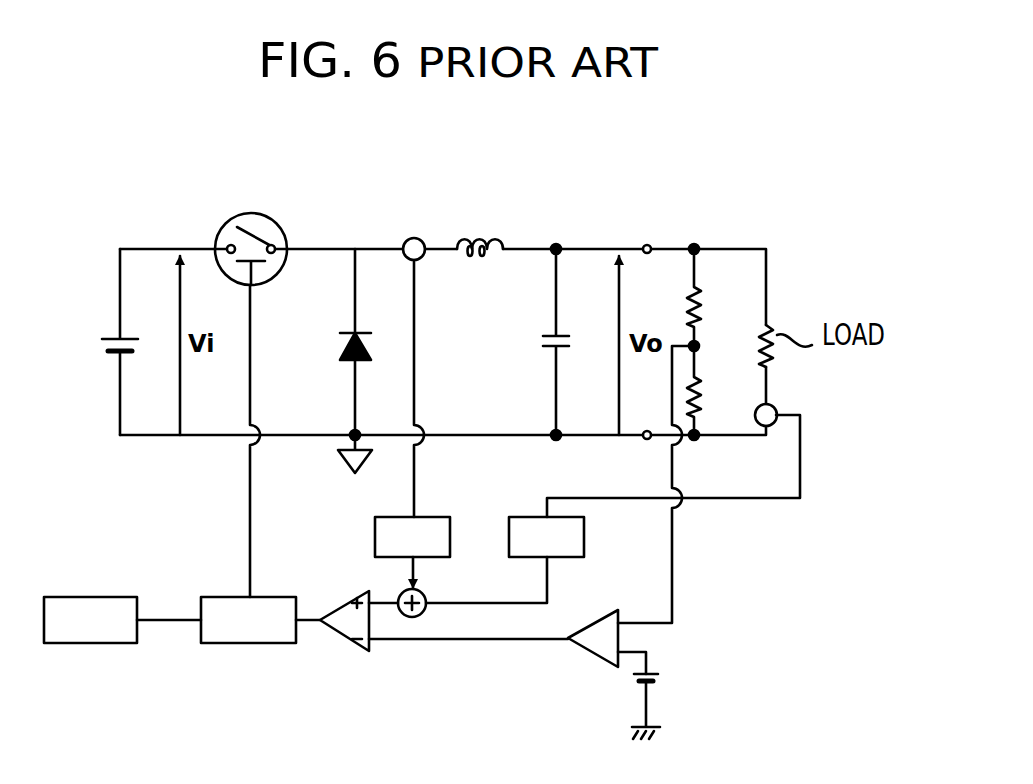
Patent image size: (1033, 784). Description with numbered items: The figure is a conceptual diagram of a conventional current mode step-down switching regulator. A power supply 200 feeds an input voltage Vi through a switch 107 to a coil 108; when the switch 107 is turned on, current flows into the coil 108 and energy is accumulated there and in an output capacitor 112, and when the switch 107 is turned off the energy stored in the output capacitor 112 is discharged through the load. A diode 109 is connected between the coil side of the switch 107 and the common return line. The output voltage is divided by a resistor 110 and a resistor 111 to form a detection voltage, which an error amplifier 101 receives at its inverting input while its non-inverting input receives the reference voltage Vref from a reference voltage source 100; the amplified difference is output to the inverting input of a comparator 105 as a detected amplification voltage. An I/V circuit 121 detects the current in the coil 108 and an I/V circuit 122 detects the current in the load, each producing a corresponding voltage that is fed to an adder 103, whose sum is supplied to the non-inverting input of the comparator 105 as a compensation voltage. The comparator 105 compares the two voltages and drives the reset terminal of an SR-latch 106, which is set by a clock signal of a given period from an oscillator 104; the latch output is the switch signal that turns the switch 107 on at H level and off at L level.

The reference voltage source 100 is at (661, 677).
The error amplifier 101 is at (580, 656).
The adder 103 is at (428, 596).
The oscillator 104 is at (90, 645).
The comparator 105 is at (350, 643).
The SR-latch 106 is at (240, 645).
The switch 107 is at (251, 212).
The coil 108 is at (478, 257).
The diode 109 is at (339, 348).
The resistor 110 is at (704, 311).
The resistor 111 is at (704, 401).
The output capacitor 112 is at (540, 342).
The I/V circuit 121 is at (437, 517).
The I/V circuit 122 is at (584, 535).
The input power supply 200 is at (100, 348).